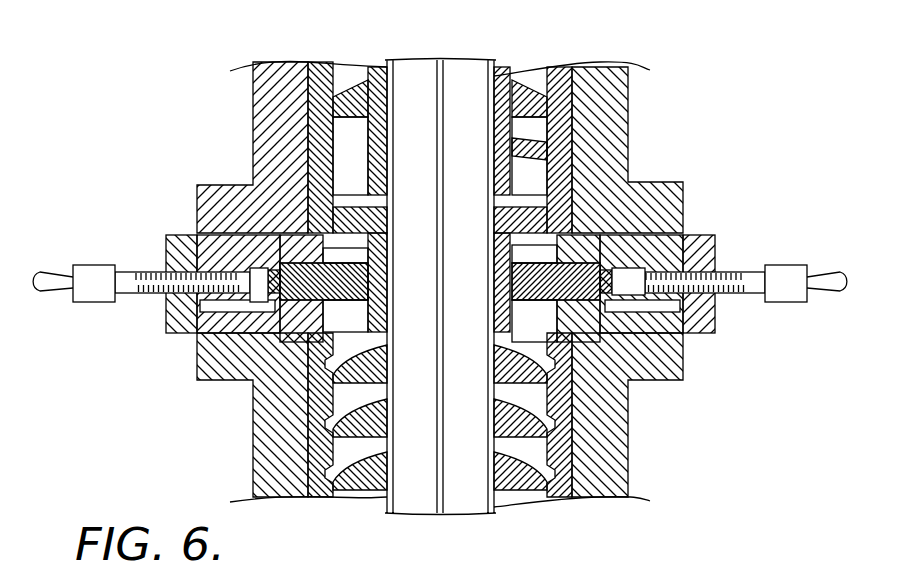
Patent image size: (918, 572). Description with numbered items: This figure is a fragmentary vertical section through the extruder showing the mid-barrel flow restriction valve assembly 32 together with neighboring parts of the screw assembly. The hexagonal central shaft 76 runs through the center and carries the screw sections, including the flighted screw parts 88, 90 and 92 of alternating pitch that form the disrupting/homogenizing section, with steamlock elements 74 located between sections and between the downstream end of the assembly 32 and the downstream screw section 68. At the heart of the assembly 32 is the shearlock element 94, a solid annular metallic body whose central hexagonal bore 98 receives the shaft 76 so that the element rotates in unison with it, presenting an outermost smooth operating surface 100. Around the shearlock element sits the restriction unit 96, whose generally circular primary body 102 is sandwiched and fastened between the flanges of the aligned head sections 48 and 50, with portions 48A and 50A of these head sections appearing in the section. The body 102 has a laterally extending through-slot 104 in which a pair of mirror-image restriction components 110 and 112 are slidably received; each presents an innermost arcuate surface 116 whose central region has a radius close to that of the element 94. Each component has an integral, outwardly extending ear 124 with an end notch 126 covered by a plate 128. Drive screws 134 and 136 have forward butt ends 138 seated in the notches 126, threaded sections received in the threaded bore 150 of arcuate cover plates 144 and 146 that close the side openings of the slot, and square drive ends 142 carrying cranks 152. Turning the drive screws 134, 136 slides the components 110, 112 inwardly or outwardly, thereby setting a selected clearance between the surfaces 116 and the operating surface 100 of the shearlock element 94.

The mid-barrel flow restriction valve assembly 32 is at (125, 176).
The head section 48 is at (617, 447).
The lower housing surface 48A is at (560, 497).
The head section 50 is at (615, 92).
The upper housing lip 50A is at (548, 80).
The downstream screw section 68 is at (347, 78).
The steamlock element 74 is at (360, 250).
The hexagonal central shaft 76 is at (455, 72).
The flighted screw part 88 is at (360, 492).
The flighted screw part 90 is at (330, 425).
The flighted screw part 92 is at (548, 395).
The shearlock element 94 is at (330, 262).
The restriction unit 96 is at (702, 350).
The central hexagonal bore 98 is at (400, 243).
The outermost smooth operating surface 100 is at (570, 225).
The primary body 102 is at (197, 327).
The through-slot 104 is at (706, 237).
The restriction component 110 is at (350, 305).
The restriction component 112 is at (530, 305).
The innermost arcuate surface 116 is at (482, 282).
The ear 124 is at (225, 236).
The end notch 126 is at (622, 245).
The plate 128 is at (248, 305).
The drive screw 134 is at (145, 300).
The drive screw 136 is at (727, 273).
The forward butt end 138 is at (612, 283).
The square drive end 142 is at (125, 263).
The arcuate cover plate 144 is at (185, 318).
The arcuate cover plate 146 is at (707, 315).
The threaded bore 150 is at (158, 275).
The crank 152 is at (32, 288).